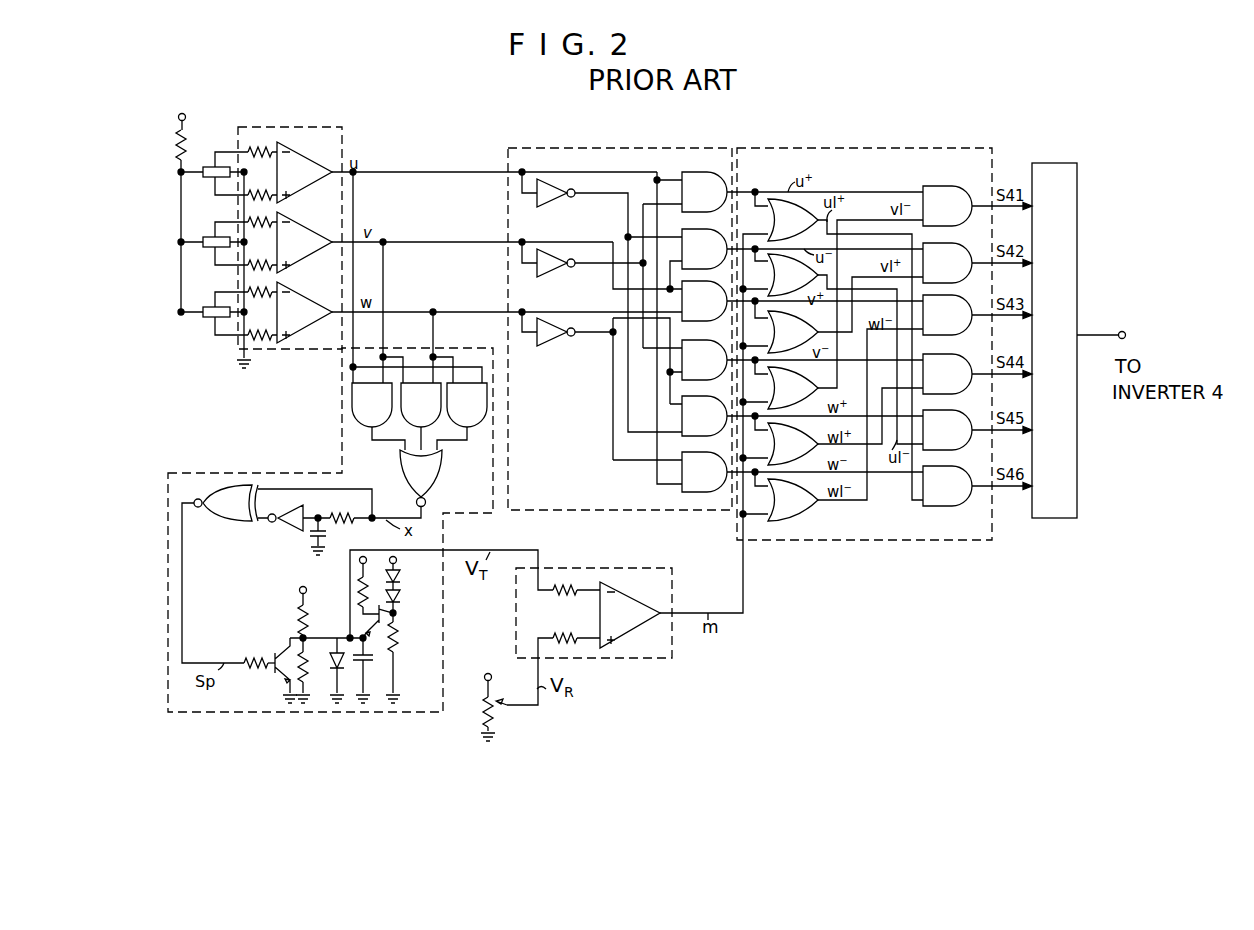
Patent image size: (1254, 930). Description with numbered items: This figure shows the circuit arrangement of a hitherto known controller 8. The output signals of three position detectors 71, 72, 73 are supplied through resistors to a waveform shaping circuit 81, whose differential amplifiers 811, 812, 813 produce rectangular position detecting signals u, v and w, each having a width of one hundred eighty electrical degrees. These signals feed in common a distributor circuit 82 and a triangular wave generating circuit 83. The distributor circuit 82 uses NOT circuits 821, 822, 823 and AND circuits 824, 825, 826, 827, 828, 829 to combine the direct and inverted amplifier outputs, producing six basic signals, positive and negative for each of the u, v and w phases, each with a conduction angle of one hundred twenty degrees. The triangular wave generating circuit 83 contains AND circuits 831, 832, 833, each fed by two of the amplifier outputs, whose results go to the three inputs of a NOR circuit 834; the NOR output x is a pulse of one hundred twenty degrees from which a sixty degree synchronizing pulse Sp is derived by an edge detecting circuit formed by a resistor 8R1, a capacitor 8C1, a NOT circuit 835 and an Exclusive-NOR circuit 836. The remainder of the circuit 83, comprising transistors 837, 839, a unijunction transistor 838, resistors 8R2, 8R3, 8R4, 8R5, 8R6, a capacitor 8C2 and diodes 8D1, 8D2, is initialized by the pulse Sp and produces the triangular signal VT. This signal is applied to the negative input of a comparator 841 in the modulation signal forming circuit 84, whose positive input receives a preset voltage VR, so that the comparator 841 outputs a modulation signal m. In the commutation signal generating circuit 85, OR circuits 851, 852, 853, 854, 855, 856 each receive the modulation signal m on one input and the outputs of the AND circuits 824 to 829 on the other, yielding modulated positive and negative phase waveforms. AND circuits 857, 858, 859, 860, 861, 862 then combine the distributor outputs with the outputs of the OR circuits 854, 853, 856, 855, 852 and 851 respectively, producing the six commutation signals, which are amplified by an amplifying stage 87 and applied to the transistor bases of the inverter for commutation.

The controller 8 is at (114, 86).
The detector 71 is at (206, 164).
The detector 72 is at (206, 234).
The detector 73 is at (206, 304).
The waveform shaping circuit 81 is at (336, 127).
The differential amplifier 811 is at (303, 168).
The differential amplifier 812 is at (303, 238).
The differential amplifier 813 is at (303, 308).
The distributor circuit 82 is at (684, 148).
The NOT circuit 821 is at (550, 197).
The NOT circuit 822 is at (550, 267).
The NOT circuit 823 is at (550, 337).
The AND circuit 824 is at (802, 192).
The AND circuit 825 is at (802, 249).
The AND circuit 826 is at (802, 301).
The AND circuit 827 is at (802, 360).
The AND circuit 828 is at (802, 416).
The AND circuit 829 is at (802, 472).
The triangular wave generating circuit 83 is at (246, 473).
The AND circuit 831 is at (378, 416).
The AND circuit 832 is at (421, 416).
The AND circuit 833 is at (462, 416).
The NOR circuit 834 is at (407, 484).
The NOT circuit 835 is at (286, 528).
The Exclusive-NOR circuit 836 is at (277, 574).
The transistor 837 is at (287, 673).
The unijunction transistor 838 is at (352, 667).
The transistor 839 is at (394, 615).
The resistor 8R1 is at (345, 512).
The resistor 8R2 is at (256, 655).
The resistor 8R3 is at (320, 613).
The resistor 8R4 is at (315, 667).
The resistor 8R5 is at (358, 585).
The resistor 8R6 is at (409, 658).
The capacitor 8C1 is at (333, 539).
The capacitor 8C2 is at (374, 658).
The diode 8D1 is at (396, 562).
The diode 8D2 is at (398, 596).
The modulation signal forming circuit 84 is at (643, 568).
The comparator 841 is at (640, 617).
The commutation signal generating circuit 85 is at (868, 148).
The OR circuit 851 is at (845, 349).
The OR circuit 852 is at (845, 349).
The OR circuit 853 is at (845, 315).
The OR circuit 854 is at (845, 314).
The OR circuit 855 is at (845, 426).
The OR circuit 856 is at (845, 425).
The AND circuit 857 is at (977, 206).
The AND circuit 858 is at (977, 263).
The AND circuit 859 is at (977, 315).
The AND circuit 860 is at (977, 374).
The AND circuit 861 is at (977, 430).
The AND circuit 862 is at (977, 486).
The amplifying stage 87 is at (1057, 168).